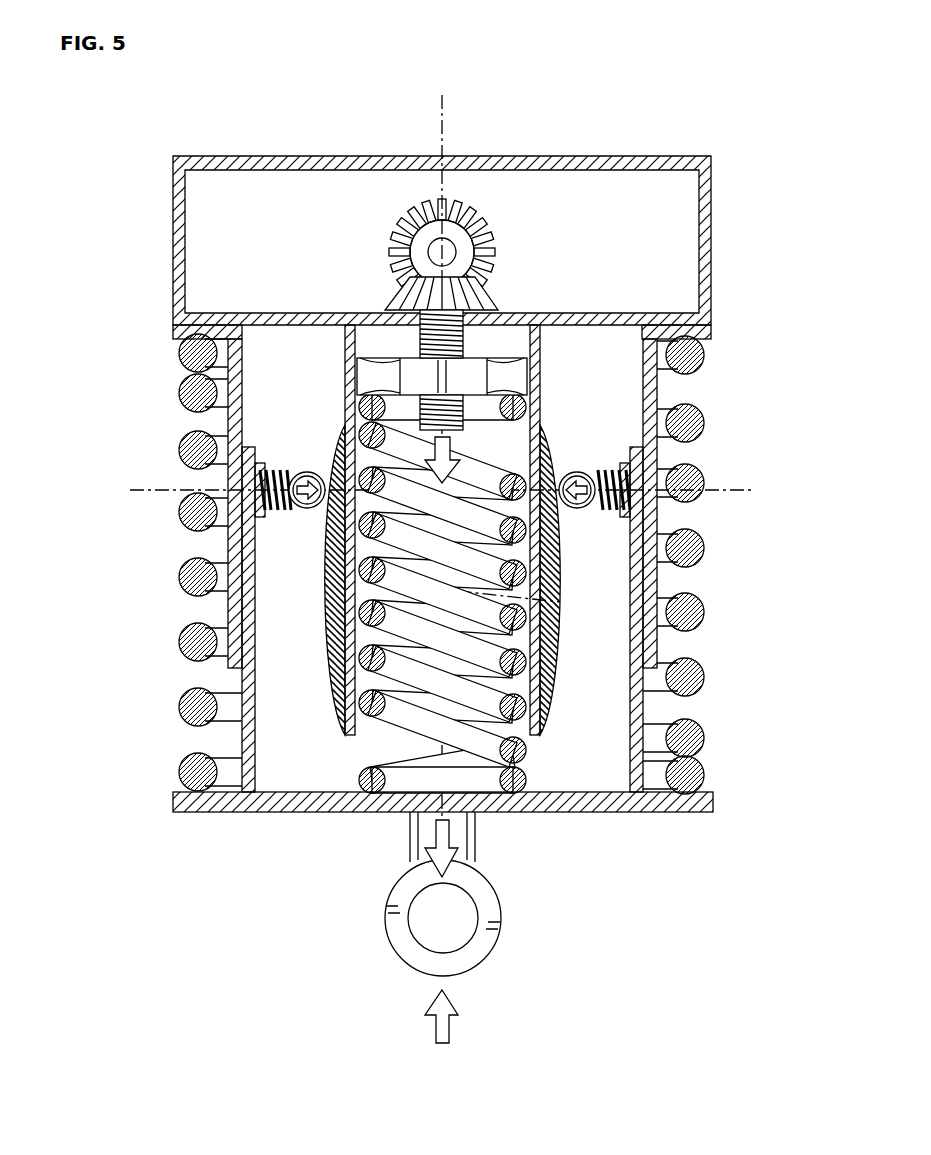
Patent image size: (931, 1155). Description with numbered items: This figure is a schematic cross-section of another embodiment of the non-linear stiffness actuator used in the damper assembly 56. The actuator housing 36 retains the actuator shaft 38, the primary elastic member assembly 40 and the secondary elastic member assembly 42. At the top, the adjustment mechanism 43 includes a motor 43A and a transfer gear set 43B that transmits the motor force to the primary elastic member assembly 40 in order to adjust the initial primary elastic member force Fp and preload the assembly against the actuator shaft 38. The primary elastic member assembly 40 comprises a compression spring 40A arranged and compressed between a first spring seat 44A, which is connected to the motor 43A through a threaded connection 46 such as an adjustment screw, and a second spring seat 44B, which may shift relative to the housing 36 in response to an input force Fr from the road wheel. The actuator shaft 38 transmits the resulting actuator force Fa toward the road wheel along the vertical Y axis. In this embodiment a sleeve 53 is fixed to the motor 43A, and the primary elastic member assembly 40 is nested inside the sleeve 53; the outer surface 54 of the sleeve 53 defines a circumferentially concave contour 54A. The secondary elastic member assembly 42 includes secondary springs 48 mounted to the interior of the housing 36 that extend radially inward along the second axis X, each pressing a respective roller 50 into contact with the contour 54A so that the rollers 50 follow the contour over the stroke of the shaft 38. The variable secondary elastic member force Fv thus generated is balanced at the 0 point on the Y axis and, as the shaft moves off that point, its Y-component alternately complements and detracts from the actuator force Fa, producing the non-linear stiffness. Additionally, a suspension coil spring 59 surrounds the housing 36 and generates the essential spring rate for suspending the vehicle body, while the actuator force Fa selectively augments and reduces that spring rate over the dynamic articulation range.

The actuator housing 36 is at (648, 702).
The actuator shaft 38 is at (477, 840).
The primary elastic member assembly 40 is at (512, 434).
The compression spring 40A is at (522, 762).
The secondary elastic member assembly 42 is at (270, 526).
The adjustment mechanism 43 is at (612, 140).
The motor 43A is at (290, 156).
The transfer gear set 43B is at (515, 268).
The first spring seat 44A is at (514, 378).
The second spring seat 44B is at (328, 806).
The threaded connection 46 is at (410, 343).
The secondary springs 48 is at (280, 472).
The rollers 50 is at (307, 475).
The sleeve 53 is at (345, 348).
The outer surface 54 is at (334, 670).
The contour 54A is at (322, 598).
The damper assembly 56 is at (128, 296).
The suspension coil spring 59 is at (190, 452).
The primary elastic member force Fp is at (452, 440).
The secondary elastic member force Fv is at (318, 500).
The actuator force Fa is at (432, 830).
The input force Fr is at (450, 1030).
The second axis X is at (738, 498).
The Y axis Y is at (447, 130).
The zero point 0 is at (548, 597).